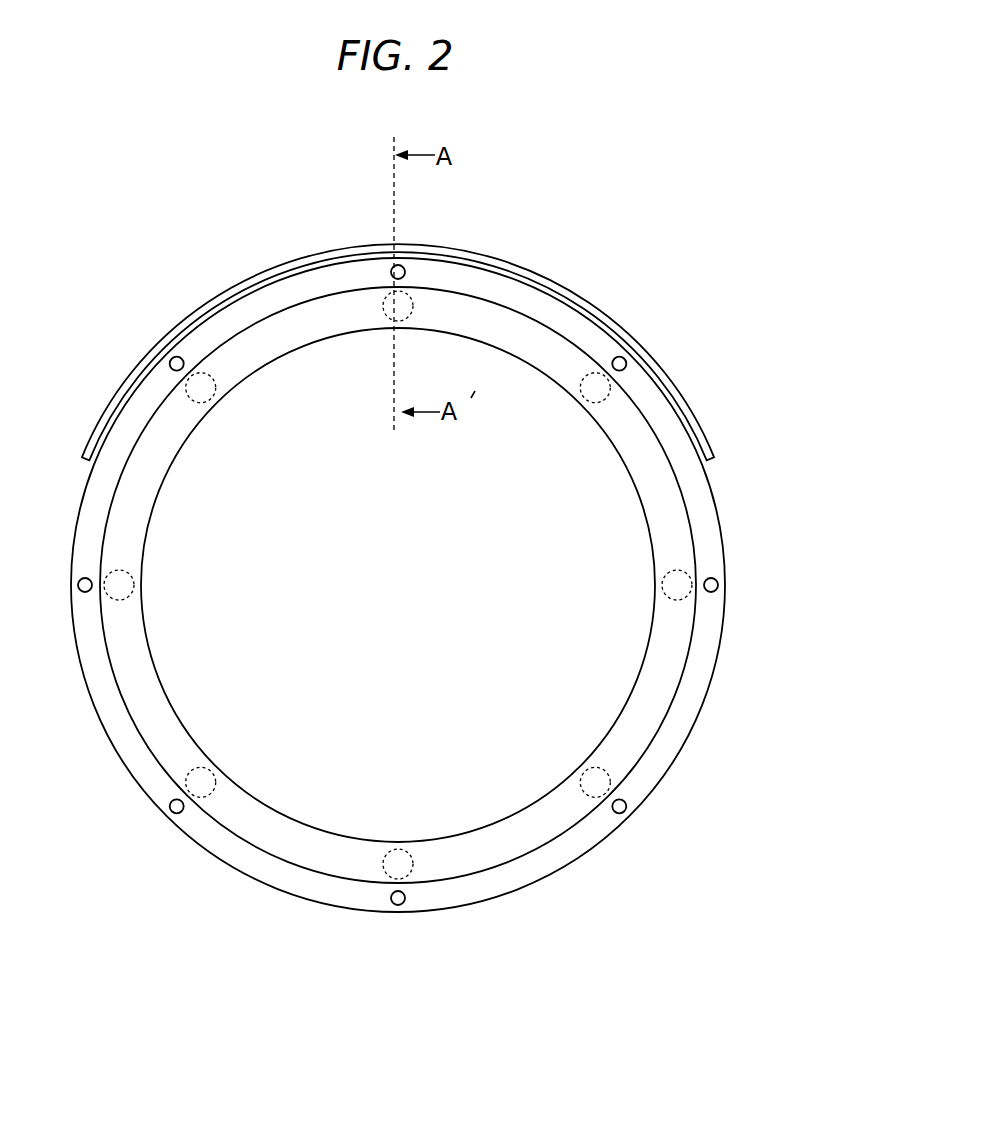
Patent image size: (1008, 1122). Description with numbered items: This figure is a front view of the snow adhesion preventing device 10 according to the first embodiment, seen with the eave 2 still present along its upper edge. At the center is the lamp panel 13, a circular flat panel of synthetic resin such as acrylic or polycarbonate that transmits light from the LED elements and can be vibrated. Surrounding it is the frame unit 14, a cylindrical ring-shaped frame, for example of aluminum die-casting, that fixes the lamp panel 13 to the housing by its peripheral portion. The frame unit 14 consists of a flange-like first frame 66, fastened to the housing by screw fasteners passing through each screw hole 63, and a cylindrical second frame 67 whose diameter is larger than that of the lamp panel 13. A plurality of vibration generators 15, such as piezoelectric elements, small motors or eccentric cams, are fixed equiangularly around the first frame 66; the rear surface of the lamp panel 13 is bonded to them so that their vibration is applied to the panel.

The snow adhesion preventing device 10 is at (630, 159).
The eave 2 is at (603, 312).
The lamp panel 13 is at (267, 627).
The frame unit 14 is at (408, 610).
The vibration generator 15 is at (125, 587).
The screw hole 63 is at (394, 900).
The first frame 66 is at (575, 843).
The second frame 67 is at (492, 857).